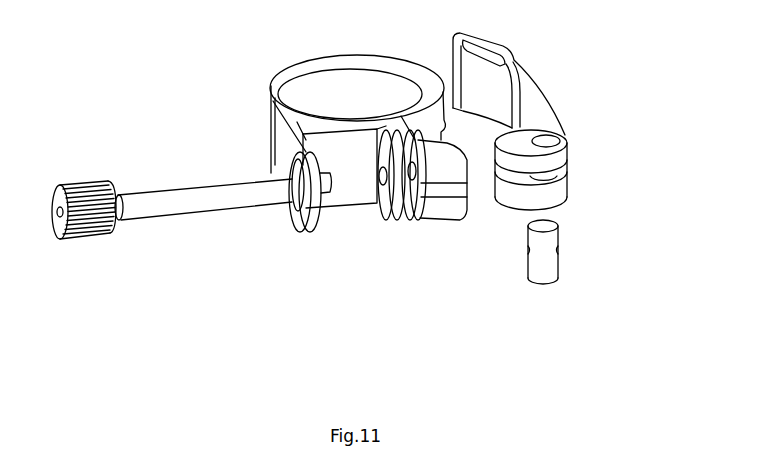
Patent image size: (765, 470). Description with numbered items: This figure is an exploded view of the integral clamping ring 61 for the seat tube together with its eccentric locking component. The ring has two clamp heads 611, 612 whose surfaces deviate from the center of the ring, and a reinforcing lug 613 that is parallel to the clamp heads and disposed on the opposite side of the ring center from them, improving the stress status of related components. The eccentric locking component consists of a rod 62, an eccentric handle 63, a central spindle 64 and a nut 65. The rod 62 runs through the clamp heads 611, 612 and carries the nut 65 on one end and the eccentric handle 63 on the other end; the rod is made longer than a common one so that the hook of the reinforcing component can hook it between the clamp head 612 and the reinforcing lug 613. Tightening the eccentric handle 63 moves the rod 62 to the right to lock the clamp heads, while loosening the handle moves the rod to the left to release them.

The clamp ring 61 is at (273, 82).
The rod 62 is at (250, 185).
The eccentric handle 63 is at (537, 100).
The central spindle 64 is at (558, 238).
The nut 65 is at (98, 238).
The clamp head 611 is at (433, 213).
The clamp head 612 is at (397, 218).
The reinforcing lug 613 is at (318, 229).